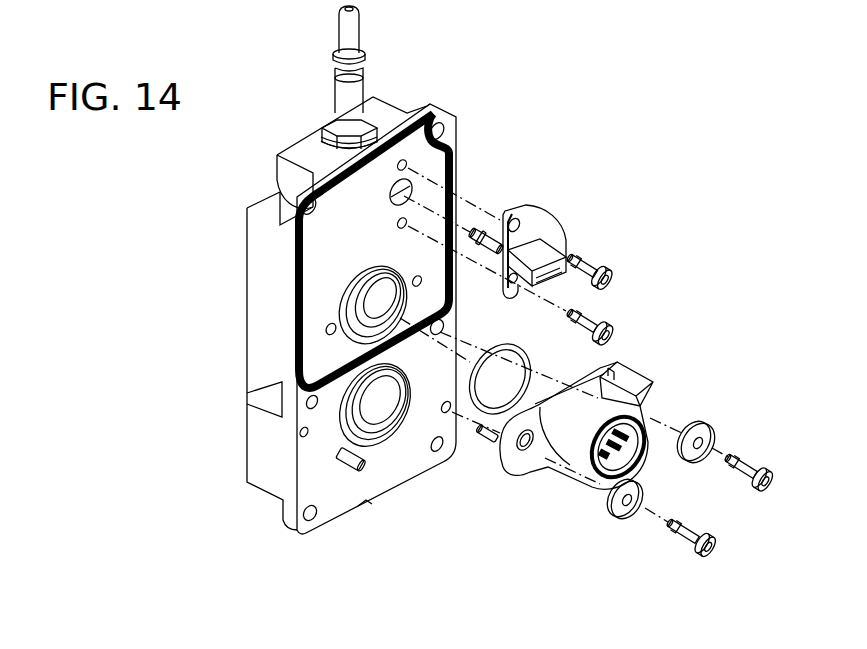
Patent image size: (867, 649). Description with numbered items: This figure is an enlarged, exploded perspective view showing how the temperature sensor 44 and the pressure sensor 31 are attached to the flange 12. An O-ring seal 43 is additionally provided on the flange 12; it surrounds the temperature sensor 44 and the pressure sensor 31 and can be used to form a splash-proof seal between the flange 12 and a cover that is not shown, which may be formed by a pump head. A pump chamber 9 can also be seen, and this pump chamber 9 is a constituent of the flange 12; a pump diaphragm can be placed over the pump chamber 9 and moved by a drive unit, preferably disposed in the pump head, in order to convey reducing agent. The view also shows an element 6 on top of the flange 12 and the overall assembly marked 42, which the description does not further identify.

The cover assembly 42 is at (371, 267).
The O-ring seal 43 is at (293, 283).
The flange 12 is at (456, 117).
The sensor 6 is at (353, 28).
The temperature sensor 44 is at (570, 227).
The pressure sensor 31 is at (653, 356).
The pump chamber 9 is at (358, 405).